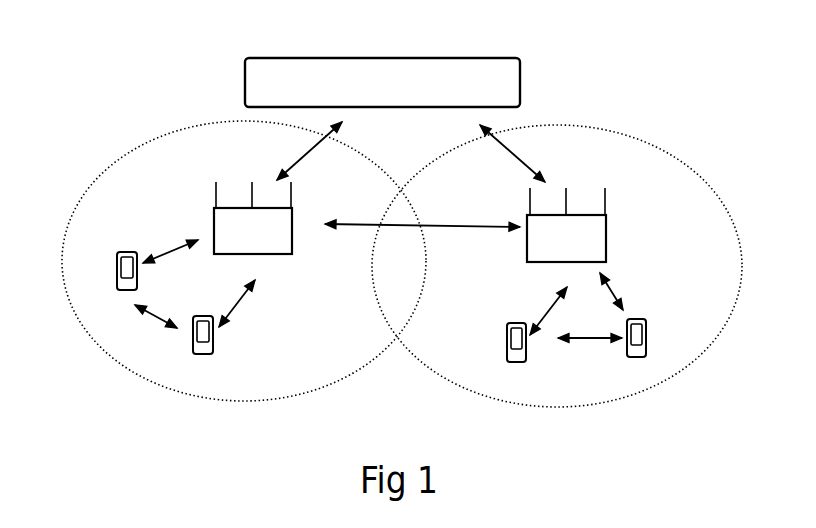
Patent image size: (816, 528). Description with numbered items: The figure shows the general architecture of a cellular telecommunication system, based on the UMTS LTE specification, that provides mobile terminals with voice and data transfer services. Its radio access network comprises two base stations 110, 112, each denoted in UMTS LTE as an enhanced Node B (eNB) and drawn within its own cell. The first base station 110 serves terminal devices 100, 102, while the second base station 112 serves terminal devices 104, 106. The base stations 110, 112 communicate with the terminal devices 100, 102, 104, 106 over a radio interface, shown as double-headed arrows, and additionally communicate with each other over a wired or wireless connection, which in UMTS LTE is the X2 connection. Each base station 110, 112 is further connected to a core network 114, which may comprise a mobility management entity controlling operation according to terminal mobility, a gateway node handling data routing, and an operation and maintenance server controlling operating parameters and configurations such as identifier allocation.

The terminal device 100 is at (137, 276).
The terminal device 102 is at (213, 341).
The terminal device 104 is at (526, 349).
The terminal device 106 is at (646, 344).
The base station 110 is at (292, 242).
The base station 112 is at (606, 249).
The core network 114 is at (520, 95).